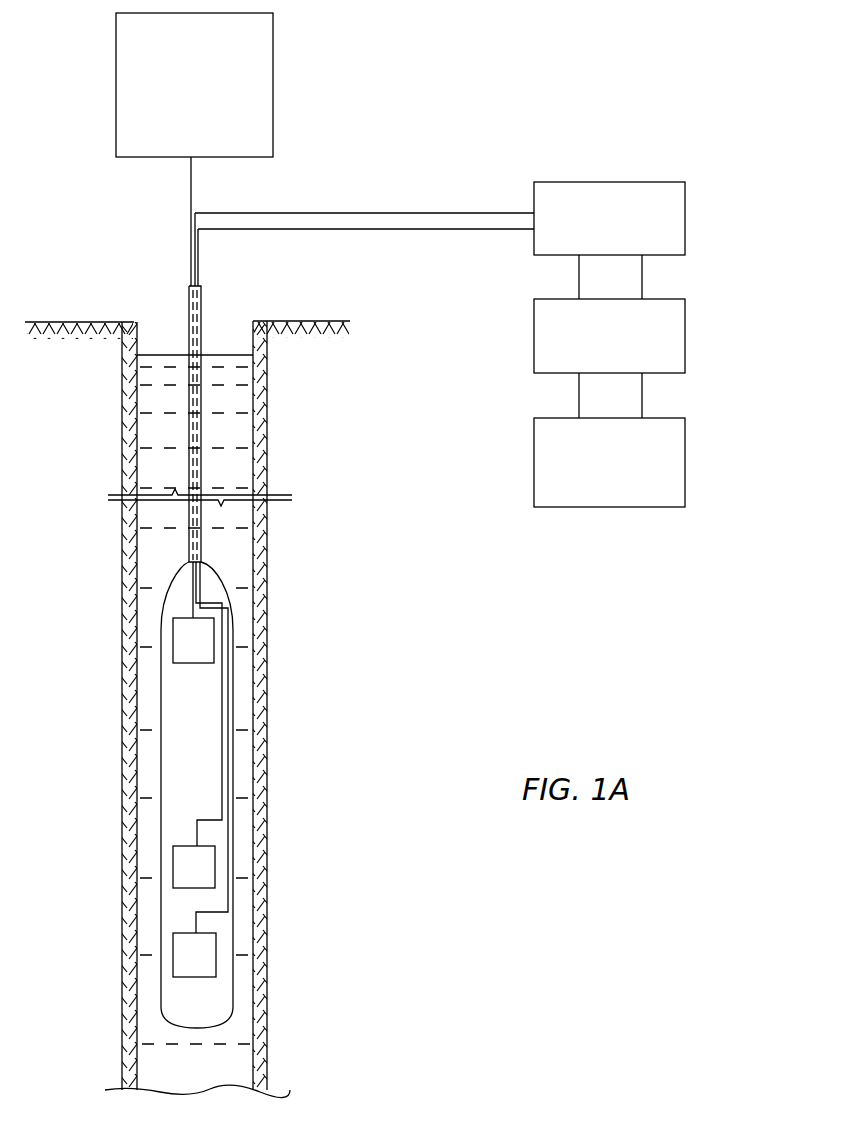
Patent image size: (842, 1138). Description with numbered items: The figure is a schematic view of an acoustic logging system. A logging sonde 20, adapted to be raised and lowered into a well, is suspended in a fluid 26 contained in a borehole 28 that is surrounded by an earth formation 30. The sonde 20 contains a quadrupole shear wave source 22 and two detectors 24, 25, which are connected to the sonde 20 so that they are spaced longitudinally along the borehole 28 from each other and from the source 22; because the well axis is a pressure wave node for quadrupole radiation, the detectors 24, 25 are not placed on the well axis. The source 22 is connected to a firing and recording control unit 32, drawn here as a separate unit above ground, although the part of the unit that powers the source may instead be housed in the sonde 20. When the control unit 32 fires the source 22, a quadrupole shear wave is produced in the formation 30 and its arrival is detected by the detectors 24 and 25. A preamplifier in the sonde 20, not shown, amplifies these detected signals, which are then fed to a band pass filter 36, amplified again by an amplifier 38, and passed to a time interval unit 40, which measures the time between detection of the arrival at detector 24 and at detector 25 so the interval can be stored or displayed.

The logging sonde 20 is at (161, 602).
The quadrupole shear wave source 22 is at (173, 648).
The detector 24 is at (173, 862).
The detector 25 is at (173, 955).
The fluid 26 is at (230, 377).
The borehole 28 is at (163, 328).
The earth formation 30 is at (298, 594).
The firing and recording control unit 32 is at (273, 40).
The band pass filter 36 is at (685, 213).
The amplifier 38 is at (685, 343).
The time interval unit 40 is at (685, 468).